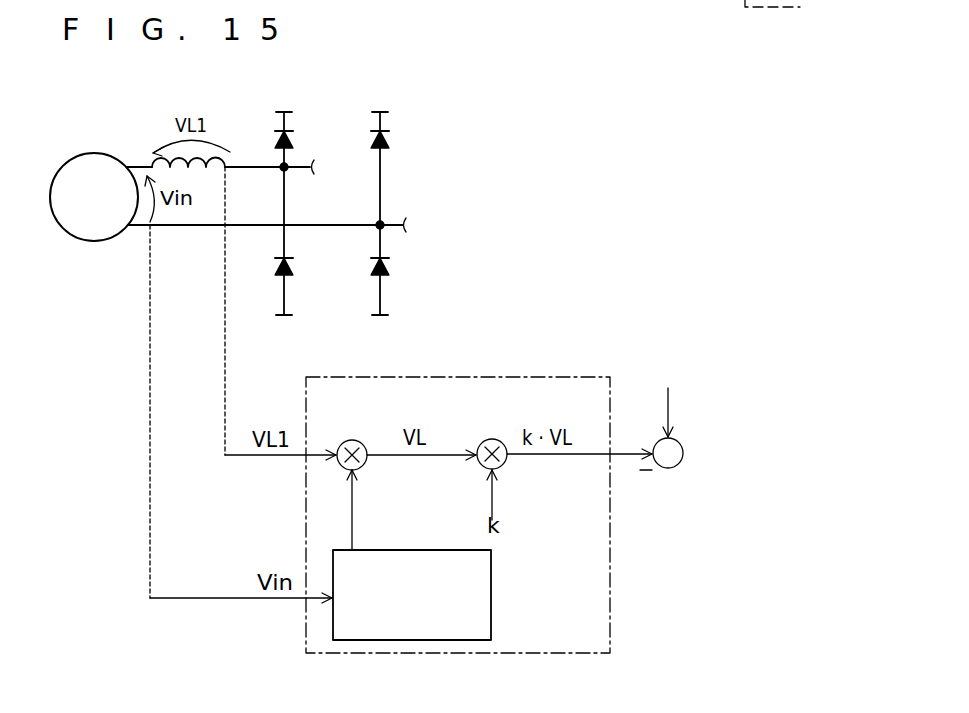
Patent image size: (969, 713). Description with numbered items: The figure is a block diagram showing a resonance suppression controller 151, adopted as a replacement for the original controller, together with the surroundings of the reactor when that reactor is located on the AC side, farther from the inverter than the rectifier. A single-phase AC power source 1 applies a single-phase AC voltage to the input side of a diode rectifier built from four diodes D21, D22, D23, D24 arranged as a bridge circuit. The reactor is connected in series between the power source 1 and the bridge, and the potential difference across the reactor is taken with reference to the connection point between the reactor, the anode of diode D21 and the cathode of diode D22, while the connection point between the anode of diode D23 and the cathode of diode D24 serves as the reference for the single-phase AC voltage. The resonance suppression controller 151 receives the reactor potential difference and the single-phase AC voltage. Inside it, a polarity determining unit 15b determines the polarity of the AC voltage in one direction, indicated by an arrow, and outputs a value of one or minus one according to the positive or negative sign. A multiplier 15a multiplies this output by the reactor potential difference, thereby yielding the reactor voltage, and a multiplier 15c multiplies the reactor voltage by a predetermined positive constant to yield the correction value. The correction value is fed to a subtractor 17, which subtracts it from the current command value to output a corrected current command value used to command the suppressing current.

The single-phase AC power source 1 is at (103, 157).
The diode D21 is at (294, 137).
The diode D22 is at (294, 264).
The diode D23 is at (390, 137).
The diode D24 is at (390, 264).
The multiplier 15a is at (351, 438).
The polarity determining unit 15b is at (389, 549).
The multiplier 15c is at (490, 437).
The subtractor 17 is at (667, 470).
The resonance suppression controller 151 is at (610, 595).